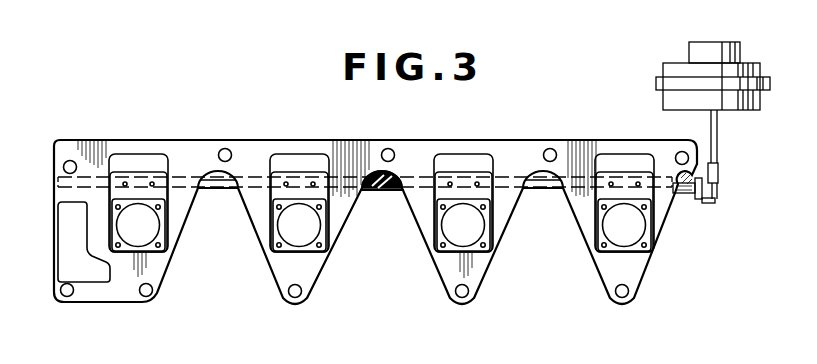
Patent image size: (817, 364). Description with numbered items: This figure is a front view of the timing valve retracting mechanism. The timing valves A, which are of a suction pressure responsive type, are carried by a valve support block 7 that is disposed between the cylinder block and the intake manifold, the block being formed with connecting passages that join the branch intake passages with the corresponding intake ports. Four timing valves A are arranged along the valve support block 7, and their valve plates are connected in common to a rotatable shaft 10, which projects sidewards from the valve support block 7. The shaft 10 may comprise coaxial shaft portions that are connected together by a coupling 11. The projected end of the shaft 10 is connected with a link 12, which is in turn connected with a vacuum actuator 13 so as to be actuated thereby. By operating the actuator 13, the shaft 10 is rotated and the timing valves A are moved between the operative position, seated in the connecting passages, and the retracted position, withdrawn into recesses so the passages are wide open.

The valve support block 7 is at (557, 140).
The rotatable shaft 10 is at (215, 190).
The coupling 11 is at (382, 196).
The link 12 is at (718, 188).
The vacuum actuator 13 is at (663, 68).
The timing valve A is at (148, 238).